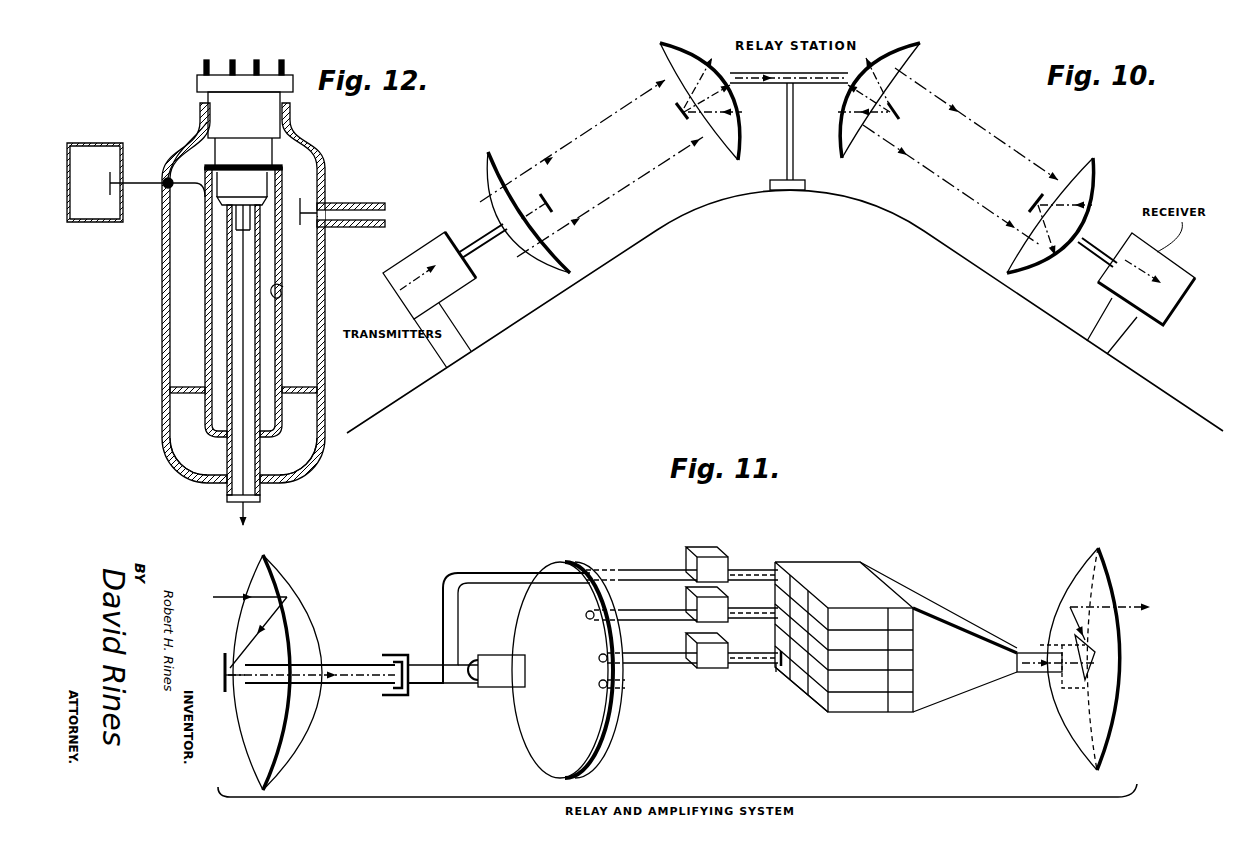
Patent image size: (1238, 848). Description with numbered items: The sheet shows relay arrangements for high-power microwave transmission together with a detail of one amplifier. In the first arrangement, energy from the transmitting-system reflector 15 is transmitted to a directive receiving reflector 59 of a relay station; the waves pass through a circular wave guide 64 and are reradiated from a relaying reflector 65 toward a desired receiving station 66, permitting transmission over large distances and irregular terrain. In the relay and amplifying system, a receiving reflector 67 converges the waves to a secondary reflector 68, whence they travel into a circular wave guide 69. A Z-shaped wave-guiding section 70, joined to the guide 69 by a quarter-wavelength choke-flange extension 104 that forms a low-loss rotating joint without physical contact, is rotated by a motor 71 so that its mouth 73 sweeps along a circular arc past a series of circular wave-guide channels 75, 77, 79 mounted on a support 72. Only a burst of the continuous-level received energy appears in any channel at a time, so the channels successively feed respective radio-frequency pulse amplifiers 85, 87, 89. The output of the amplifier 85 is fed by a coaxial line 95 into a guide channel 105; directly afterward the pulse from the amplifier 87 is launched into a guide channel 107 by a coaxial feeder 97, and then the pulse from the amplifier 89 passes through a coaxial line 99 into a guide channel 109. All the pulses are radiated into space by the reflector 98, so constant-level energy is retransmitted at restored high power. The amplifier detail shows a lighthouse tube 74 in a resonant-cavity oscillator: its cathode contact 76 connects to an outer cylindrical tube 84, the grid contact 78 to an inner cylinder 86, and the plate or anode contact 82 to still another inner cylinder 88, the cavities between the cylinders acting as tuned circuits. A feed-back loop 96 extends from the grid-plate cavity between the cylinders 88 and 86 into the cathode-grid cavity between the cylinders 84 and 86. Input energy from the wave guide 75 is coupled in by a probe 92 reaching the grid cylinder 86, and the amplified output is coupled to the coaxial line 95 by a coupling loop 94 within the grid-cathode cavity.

In FIG. 10, the transmitting-system reflector 15 is at (540, 268).
In FIG. 10, the directive receiving reflector 59 is at (671, 58).
In FIG. 10, the circular wave guide 64 is at (815, 84).
In FIG. 10, the relaying reflector 65 is at (850, 140).
In FIG. 10, the receiving station 66 is at (1096, 179).
In FIG. 11, the receiving reflector 67 is at (290, 588).
In FIG. 11, the secondary reflector 68 is at (222, 662).
In FIG. 11, the circular wave guide 69 is at (350, 664).
In FIG. 11, the Z-shaped wave-guiding section 70 is at (446, 612).
In FIG. 11, the motor 71 is at (501, 690).
In FIG. 11, the support 72 is at (612, 730).
In FIG. 11, the mouth 73 is at (529, 577).
In FIG. 12, the circular wave-guide channel 75 is at (95, 223).
In FIG. 11, the circular wave-guide channel 75 is at (588, 576).
In FIG. 11, the circular wave-guide channel 77 is at (589, 619).
In FIG. 11, the circular wave-guide channel 79 is at (655, 659).
In FIG. 12, the radio-frequency pulse amplifier 85 is at (185, 448).
In FIG. 11, the radio-frequency pulse amplifier 85 is at (704, 550).
In FIG. 11, the radio-frequency pulse amplifier 87 is at (722, 594).
In FIG. 11, the radio-frequency pulse amplifier 89 is at (728, 645).
In FIG. 12, the coaxial line 95 is at (386, 226).
In FIG. 11, the coaxial line 95 is at (760, 570).
In FIG. 11, the coaxial feeder 97 is at (766, 664).
In FIG. 11, the reflector 98 is at (1115, 656).
In FIG. 11, the coaxial line 99 is at (776, 672).
In FIG. 11, the choke-flange extension 104 is at (394, 697).
In FIG. 11, the guide channel 105 is at (800, 562).
In FIG. 11, the guide channel 107 is at (776, 608).
In FIG. 11, the guide channel 109 is at (786, 670).
In FIG. 12, the lighthouse tube 74 is at (265, 116).
In FIG. 12, the cathode contact 76 is at (205, 98).
In FIG. 12, the grid contact 78 is at (273, 170).
In FIG. 12, the plate or anode contact 82 is at (222, 206).
In FIG. 12, the outer cylindrical tube 84 is at (163, 352).
In FIG. 12, the inner cylinder 86 is at (283, 244).
In FIG. 12, the inner cylinder 88 is at (227, 291).
In FIG. 12, the probe 92 is at (186, 152).
In FIG. 12, the coupling loop 94 is at (305, 206).
In FIG. 12, the feed-back loop 96 is at (285, 292).